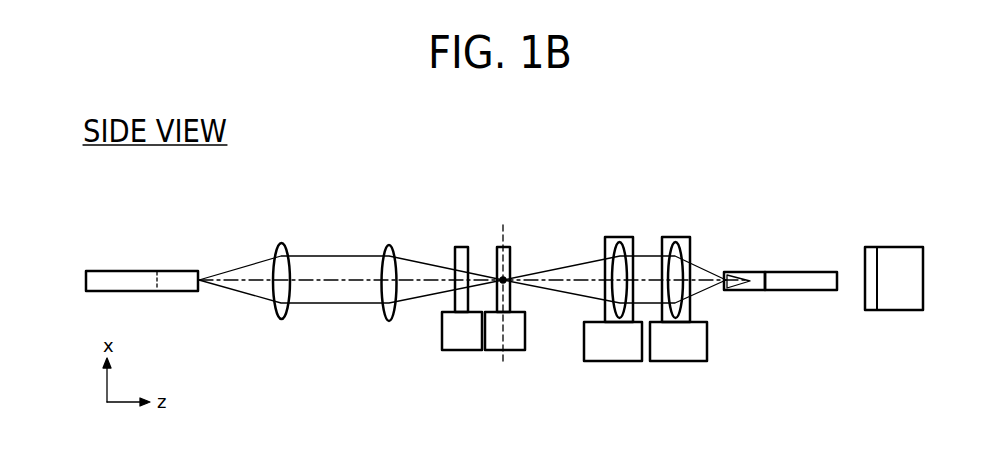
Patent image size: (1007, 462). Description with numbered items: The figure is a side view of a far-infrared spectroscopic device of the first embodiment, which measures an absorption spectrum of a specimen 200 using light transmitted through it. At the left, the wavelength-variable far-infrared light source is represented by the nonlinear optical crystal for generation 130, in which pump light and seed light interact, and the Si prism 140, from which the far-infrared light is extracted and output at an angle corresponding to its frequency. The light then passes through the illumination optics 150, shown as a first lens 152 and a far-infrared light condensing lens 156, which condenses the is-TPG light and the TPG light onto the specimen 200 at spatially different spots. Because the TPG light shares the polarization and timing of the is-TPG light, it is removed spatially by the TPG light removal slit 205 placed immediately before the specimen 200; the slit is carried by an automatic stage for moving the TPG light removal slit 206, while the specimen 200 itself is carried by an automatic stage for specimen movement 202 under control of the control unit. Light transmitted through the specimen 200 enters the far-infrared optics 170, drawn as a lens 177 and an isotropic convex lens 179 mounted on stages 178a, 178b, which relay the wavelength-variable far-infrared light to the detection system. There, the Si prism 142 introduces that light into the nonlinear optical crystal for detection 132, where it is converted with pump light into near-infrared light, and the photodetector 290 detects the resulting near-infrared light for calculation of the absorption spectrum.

The nonlinear optical crystal for generation 130 is at (117, 270).
The Si prism 140 is at (178, 270).
The illumination optics 150 is at (334, 222).
The first lens 152 is at (278, 243).
The far-infrared light condensing lens 156 is at (381, 248).
The TPG light removal slit 205 is at (462, 248).
The specimen 200 is at (508, 248).
The automatic stage for moving the TPG light removal slit 206 is at (450, 350).
The automatic stage for specimen movement 202 is at (512, 350).
The far-infrared optics 170 is at (642, 221).
The third lens 177 is at (606, 237).
The isotropic convex lens 179 is at (675, 249).
The lens actuator 178a is at (602, 362).
The lens actuator 178b is at (675, 362).
The Si prism 142 is at (752, 272).
The nonlinear optical crystal for detection 132 is at (807, 272).
The photodetector 290 is at (893, 247).